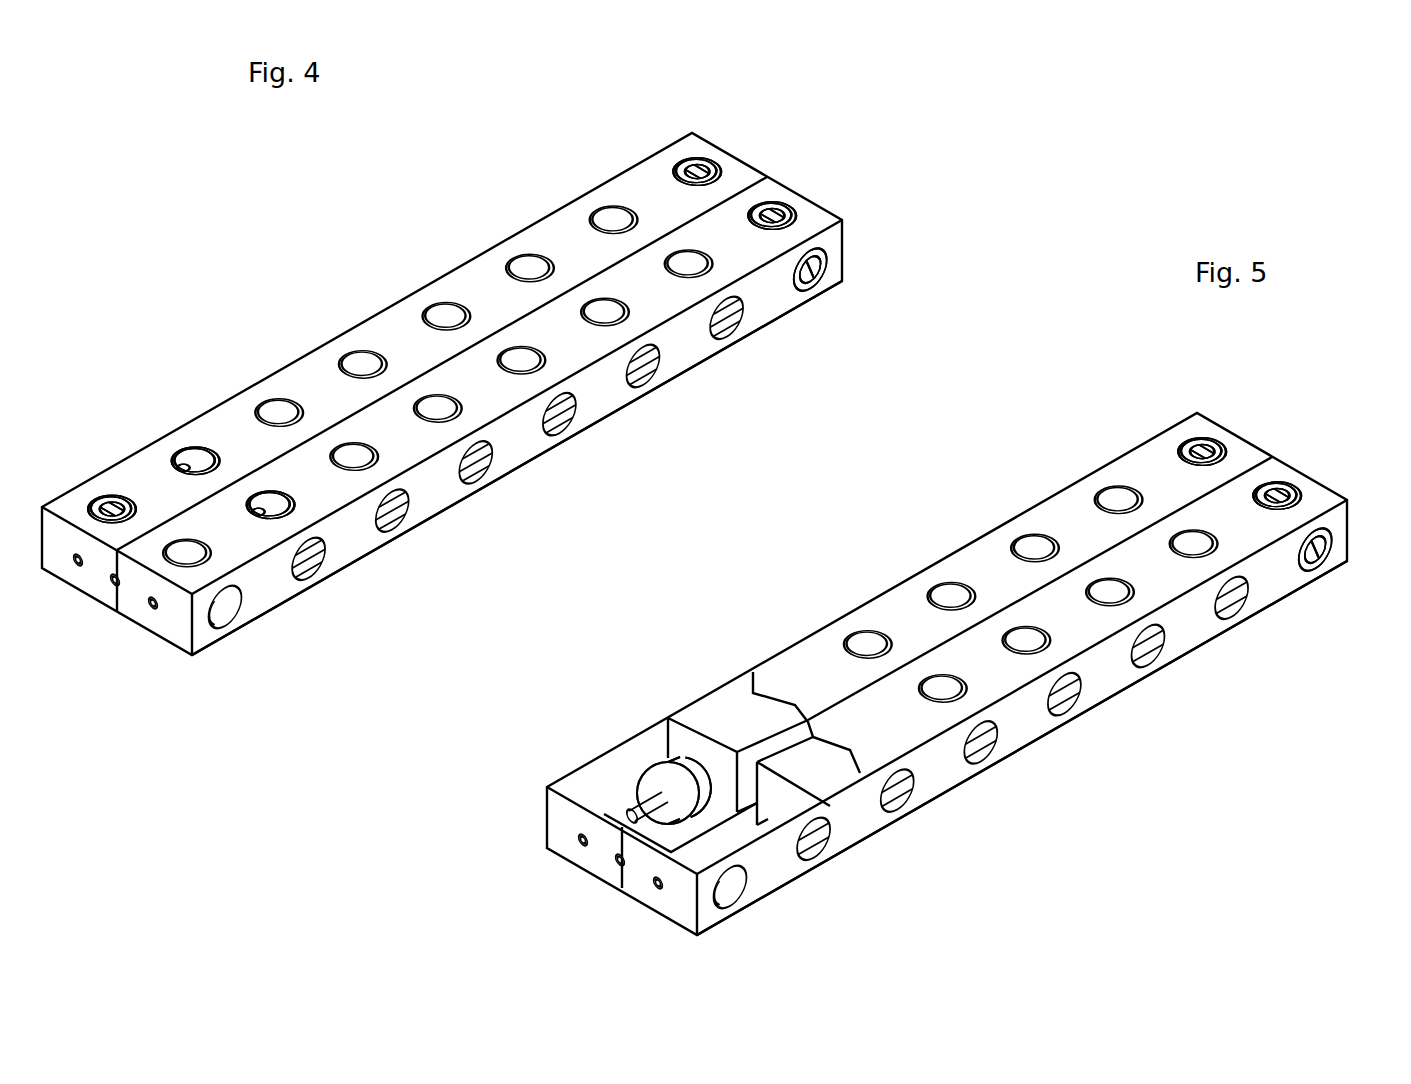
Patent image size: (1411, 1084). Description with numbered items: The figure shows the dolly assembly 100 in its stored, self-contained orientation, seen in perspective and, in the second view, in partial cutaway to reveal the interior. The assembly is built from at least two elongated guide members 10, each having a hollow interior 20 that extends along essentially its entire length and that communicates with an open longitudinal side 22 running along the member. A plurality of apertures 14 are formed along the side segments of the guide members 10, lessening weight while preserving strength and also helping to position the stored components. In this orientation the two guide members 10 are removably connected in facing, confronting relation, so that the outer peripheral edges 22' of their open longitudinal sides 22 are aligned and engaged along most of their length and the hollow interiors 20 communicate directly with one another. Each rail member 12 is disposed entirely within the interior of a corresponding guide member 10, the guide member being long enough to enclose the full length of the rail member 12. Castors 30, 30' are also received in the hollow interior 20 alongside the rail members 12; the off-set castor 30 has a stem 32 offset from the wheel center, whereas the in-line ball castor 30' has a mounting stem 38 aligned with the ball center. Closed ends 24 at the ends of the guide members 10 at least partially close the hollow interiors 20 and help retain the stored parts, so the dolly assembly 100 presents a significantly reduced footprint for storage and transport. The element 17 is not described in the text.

In FIG. 4, the dolly assembly 100 is at (133, 229).
In FIG. 5, the dolly assembly 100 is at (382, 773).
In FIG. 4, the guide member 10 is at (442, 394).
In FIG. 5, the guide member 10 is at (947, 674).
In FIG. 4, the rail member 12 is at (517, 407).
In FIG. 5, the rail member 12 is at (975, 687).
In FIG. 4, the apertures 14 is at (448, 430).
In FIG. 5, the apertures 14 is at (983, 697).
In FIG. 4, the side face 17 is at (517, 468).
In FIG. 5, the side face 17 is at (1022, 748).
In FIG. 5, the hollow interior 20 is at (727, 859).
In FIG. 5, the open longitudinal side 22 is at (953, 713).
In FIG. 4, the outer peripheral edges 22' is at (442, 363).
In FIG. 5, the outer peripheral edges 22' is at (1025, 686).
In FIG. 4, the closed ends 24 is at (116, 608).
In FIG. 5, the closed ends 24 is at (621, 887).
In FIG. 4, the castors 30 is at (442, 303).
In FIG. 5, the castors 30 is at (948, 591).
In FIG. 4, the in-line castor 30' is at (442, 316).
In FIG. 5, the in-line castor 30' is at (971, 603).
In FIG. 4, the stem 32 is at (835, 293).
In FIG. 5, the stem 32 is at (1350, 566).
In FIG. 4, the mounting stem 38 is at (816, 280).
In FIG. 5, the mounting stem 38 is at (1328, 552).